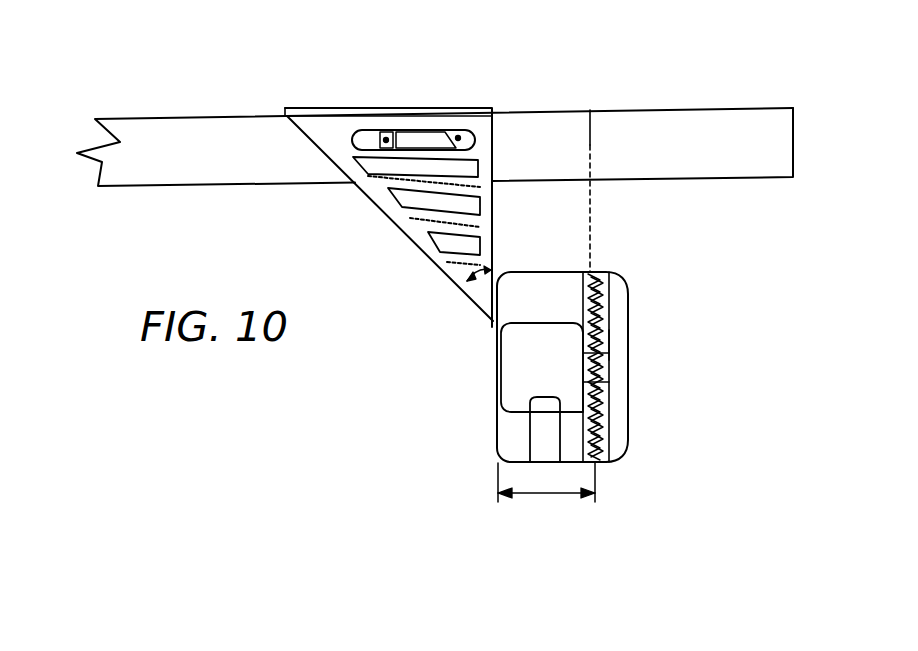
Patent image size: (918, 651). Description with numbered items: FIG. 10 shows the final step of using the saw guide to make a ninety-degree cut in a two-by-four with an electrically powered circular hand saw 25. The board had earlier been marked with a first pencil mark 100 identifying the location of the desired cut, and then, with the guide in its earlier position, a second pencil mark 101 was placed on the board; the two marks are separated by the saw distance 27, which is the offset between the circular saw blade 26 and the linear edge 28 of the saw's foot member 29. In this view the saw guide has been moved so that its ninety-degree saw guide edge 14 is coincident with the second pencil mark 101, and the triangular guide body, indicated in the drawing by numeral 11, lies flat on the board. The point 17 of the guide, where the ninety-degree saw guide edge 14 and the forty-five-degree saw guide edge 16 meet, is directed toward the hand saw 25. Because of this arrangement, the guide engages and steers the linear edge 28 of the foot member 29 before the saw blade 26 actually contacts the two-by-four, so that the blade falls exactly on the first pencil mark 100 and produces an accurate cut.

The mounting bracket 11 is at (323, 113).
The 90-degree saw guide edge 14 is at (493, 192).
The 45-degree saw guide edge 16 is at (380, 205).
The point of the saw guide 17 is at (476, 288).
The hand saw 25 is at (630, 402).
The circular saw blade 26 is at (600, 268).
The saw distance 27 is at (530, 497).
The linear edge of foot member 28 is at (495, 325).
The foot member 29 is at (620, 345).
The first pencil mark 100 is at (590, 145).
The second pencil mark 101 is at (492, 142).